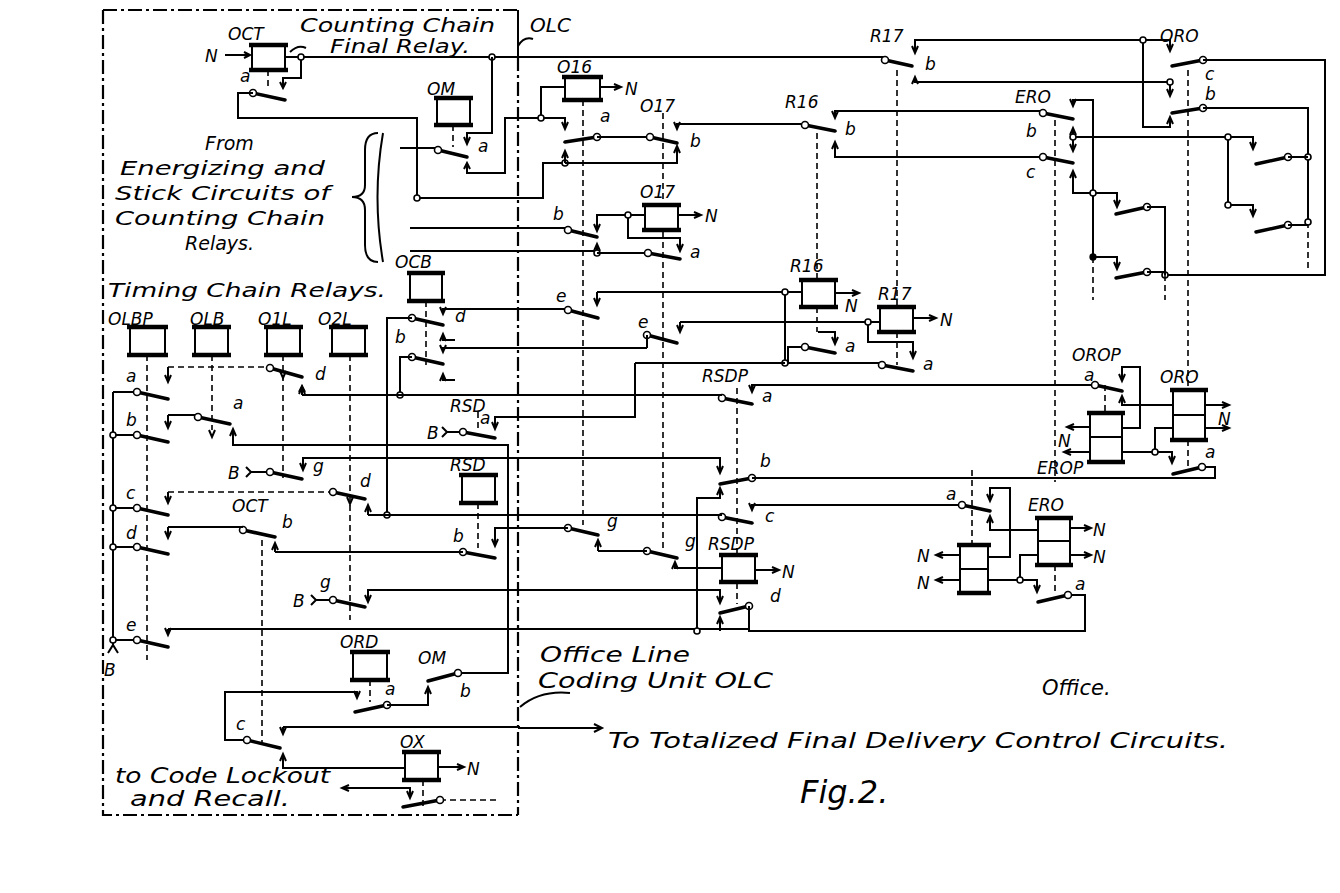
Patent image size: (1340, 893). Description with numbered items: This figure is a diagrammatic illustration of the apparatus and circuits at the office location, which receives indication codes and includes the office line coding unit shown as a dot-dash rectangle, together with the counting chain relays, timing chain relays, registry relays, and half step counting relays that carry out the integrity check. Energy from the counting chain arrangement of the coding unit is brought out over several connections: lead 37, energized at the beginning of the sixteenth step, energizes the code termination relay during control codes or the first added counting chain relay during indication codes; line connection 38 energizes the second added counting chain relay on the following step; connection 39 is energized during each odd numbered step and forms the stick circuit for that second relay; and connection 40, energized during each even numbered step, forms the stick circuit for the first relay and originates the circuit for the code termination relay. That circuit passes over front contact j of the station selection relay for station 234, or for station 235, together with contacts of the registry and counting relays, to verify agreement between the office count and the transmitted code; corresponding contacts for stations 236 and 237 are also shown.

The lead 37 is at (400, 148).
The line connection 38 is at (396, 227).
The connection 39 is at (396, 251).
The connection 40 is at (410, 197).
The station 234 is at (1274, 149).
The station 235 is at (1133, 221).
The office selector contact OS j 236 is at (1281, 215).
The office selector contact OS j 237 is at (1140, 265).